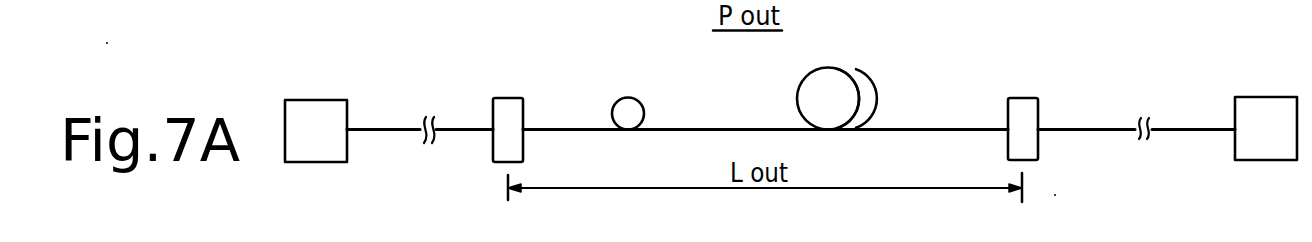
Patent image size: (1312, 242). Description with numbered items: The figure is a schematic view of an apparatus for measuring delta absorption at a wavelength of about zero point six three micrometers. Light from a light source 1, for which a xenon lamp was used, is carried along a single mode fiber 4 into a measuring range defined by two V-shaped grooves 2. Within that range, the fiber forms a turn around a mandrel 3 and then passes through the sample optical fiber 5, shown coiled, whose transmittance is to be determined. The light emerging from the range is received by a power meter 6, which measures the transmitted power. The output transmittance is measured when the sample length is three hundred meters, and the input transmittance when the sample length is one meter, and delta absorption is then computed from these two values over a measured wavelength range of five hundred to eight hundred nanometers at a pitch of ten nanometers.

The light source 1 is at (327, 100).
The V-shaped grooves 2 is at (510, 98).
The turn around a mandrel 3 is at (628, 97).
The single mode fiber 4 is at (383, 130).
The optical fiber 5 is at (888, 77).
The power meter 6 is at (1260, 97).